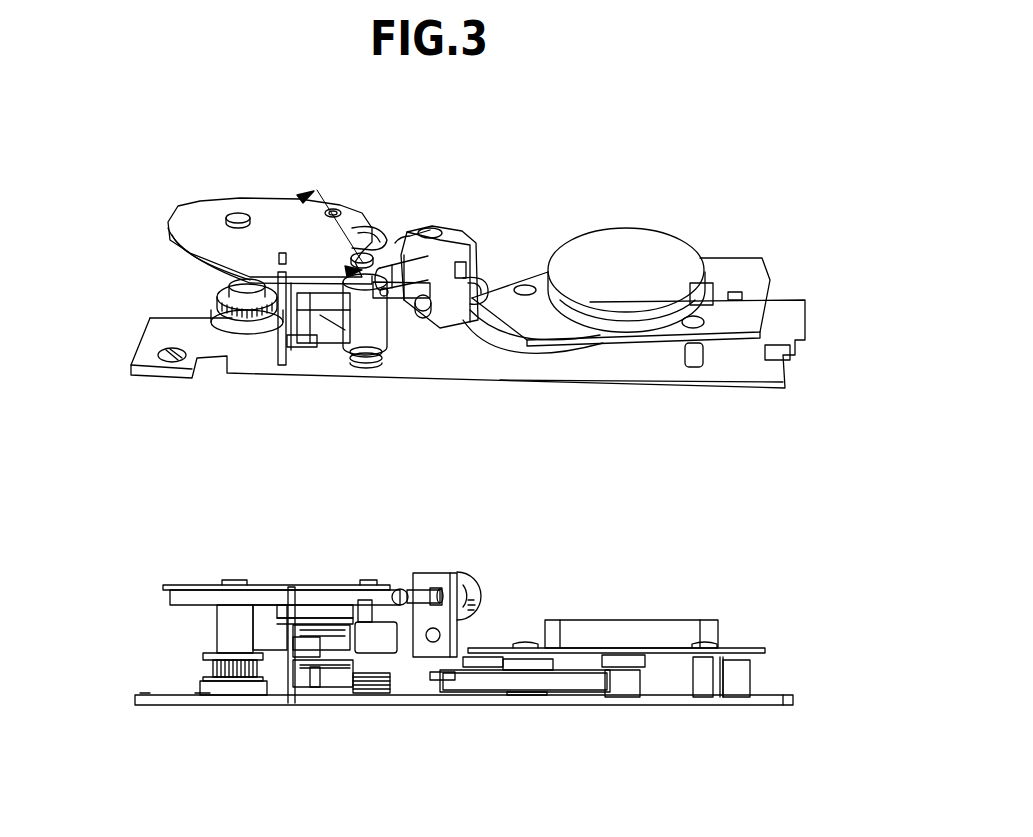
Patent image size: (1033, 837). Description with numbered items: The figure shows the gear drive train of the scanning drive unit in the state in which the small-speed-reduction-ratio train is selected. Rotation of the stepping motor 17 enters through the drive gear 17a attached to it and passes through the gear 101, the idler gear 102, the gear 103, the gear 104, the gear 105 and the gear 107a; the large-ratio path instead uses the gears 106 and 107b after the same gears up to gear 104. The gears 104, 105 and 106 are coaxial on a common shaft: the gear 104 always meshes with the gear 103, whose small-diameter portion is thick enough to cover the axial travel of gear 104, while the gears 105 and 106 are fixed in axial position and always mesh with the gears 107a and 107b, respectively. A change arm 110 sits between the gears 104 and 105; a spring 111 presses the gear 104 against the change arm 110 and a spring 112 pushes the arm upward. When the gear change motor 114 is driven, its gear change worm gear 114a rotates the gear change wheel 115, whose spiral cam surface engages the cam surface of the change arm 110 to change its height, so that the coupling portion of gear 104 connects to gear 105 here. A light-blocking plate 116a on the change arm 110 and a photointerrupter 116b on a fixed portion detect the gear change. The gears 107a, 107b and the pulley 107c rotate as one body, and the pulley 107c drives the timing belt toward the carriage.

The stepping motor 17 is at (665, 315).
The drive gear 17a is at (622, 343).
The gear 101 is at (567, 357).
The idler gear 102 is at (478, 335).
The gear 103 is at (480, 278).
The gear 104 is at (398, 247).
The gear 105 is at (398, 320).
The gear 106 is at (373, 228).
The gear 107a is at (227, 328).
The gear 107b is at (180, 257).
The pulley 107c is at (217, 300).
The change arm 110 is at (357, 335).
The spring 111 is at (323, 613).
The spring 112 is at (378, 690).
The gear change motor 114 is at (447, 330).
The gear change worm gear 114a is at (407, 300).
The gear change wheel 115 is at (368, 292).
The light-blocking plate 116a is at (291, 335).
The photointerrupter 116b is at (307, 350).